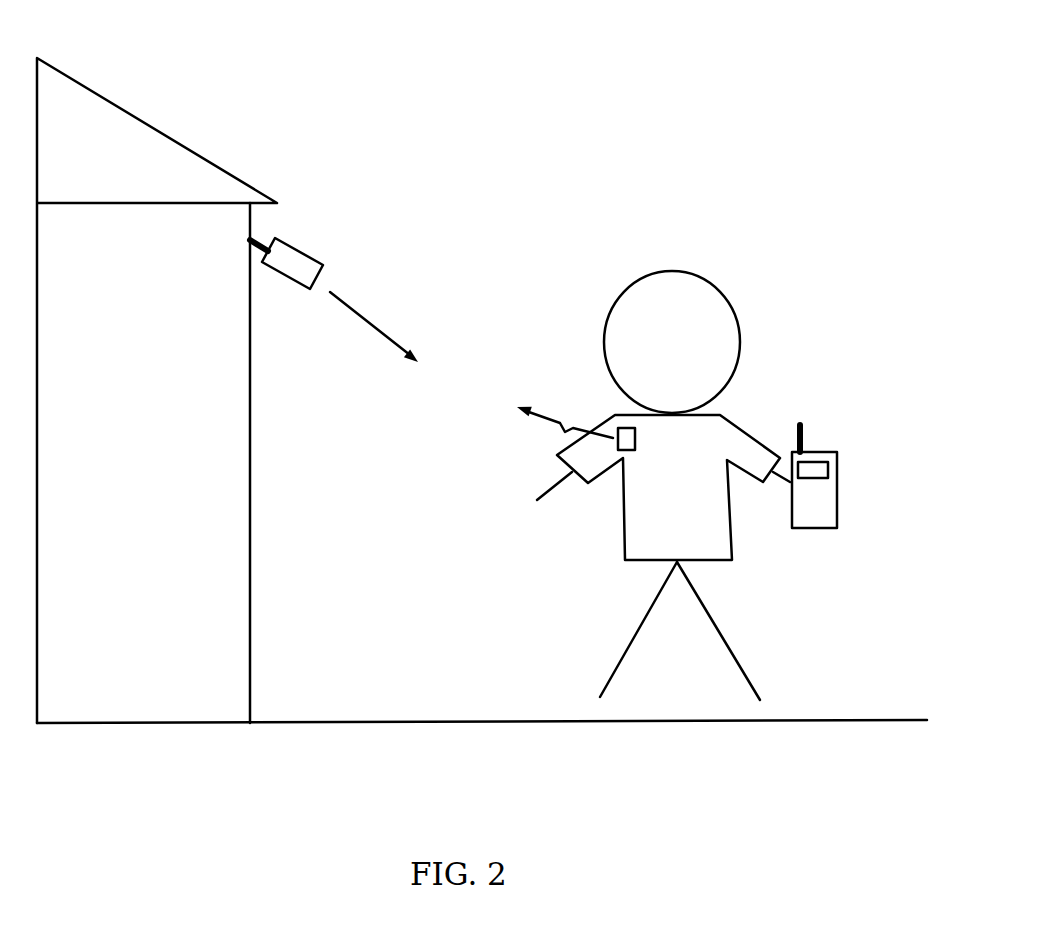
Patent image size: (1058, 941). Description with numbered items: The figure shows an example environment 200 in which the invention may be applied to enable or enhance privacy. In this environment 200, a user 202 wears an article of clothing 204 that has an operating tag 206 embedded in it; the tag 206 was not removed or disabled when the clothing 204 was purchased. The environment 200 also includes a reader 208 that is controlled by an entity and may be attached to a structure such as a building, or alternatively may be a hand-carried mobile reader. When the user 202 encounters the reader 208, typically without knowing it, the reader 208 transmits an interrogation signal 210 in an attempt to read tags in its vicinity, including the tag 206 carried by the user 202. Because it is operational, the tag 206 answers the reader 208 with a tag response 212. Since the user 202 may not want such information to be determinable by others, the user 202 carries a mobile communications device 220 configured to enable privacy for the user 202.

The environment 200 is at (662, 101).
The user 202 is at (713, 283).
The article of clothing 204 is at (743, 422).
The tag 206 is at (637, 437).
The reader 208 is at (303, 250).
The interrogation signal 210 is at (372, 339).
The tag response 212 is at (563, 428).
The mobile communications device 220 is at (837, 488).